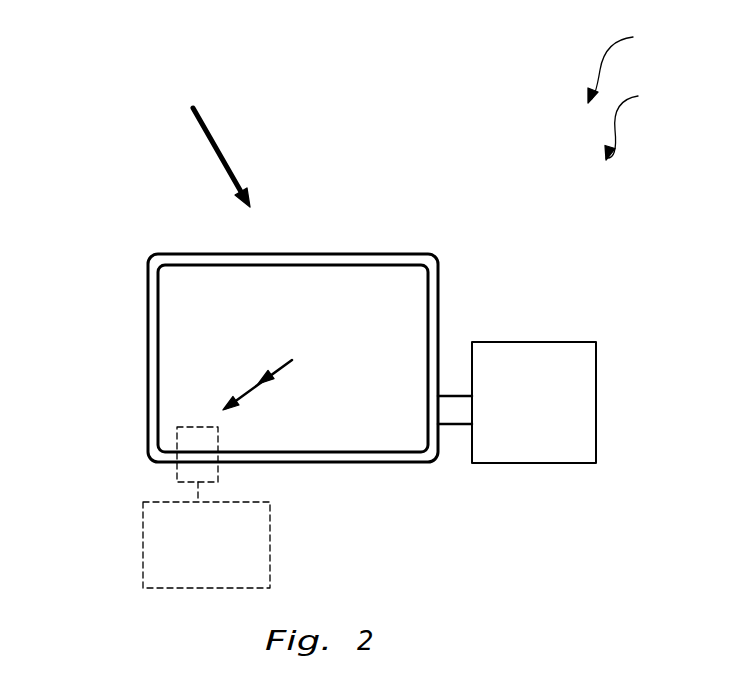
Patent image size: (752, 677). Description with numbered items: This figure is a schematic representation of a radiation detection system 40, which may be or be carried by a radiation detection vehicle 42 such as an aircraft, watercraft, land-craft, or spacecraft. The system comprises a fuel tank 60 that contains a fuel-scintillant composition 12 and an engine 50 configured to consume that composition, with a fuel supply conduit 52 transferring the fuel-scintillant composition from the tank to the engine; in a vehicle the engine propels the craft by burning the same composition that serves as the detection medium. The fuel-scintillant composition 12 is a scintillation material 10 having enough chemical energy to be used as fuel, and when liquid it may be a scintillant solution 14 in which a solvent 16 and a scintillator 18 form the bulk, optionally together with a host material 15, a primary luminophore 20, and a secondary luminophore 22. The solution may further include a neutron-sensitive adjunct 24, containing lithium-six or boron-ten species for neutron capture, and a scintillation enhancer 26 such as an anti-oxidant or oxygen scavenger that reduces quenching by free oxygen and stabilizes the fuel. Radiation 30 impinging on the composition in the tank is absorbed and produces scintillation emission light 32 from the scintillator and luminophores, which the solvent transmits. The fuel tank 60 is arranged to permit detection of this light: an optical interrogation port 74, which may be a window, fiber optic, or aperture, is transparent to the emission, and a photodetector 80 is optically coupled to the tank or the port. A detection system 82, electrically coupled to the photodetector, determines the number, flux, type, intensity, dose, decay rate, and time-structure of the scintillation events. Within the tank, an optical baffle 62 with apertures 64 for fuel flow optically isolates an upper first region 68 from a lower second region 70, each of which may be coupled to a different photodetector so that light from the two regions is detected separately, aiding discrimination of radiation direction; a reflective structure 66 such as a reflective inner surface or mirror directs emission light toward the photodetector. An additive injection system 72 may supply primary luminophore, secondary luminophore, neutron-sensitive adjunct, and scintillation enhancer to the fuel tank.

The scintillation material 10 is at (258, 278).
The fuel-scintillant composition 12 is at (275, 278).
The scintillant solution 14 is at (298, 277).
The host material 15 is at (367, 275).
The solvent 16 is at (320, 277).
The scintillator 18 is at (343, 276).
The primary luminophore 20 is at (417, 297).
The secondary luminophore 22 is at (390, 277).
The neutron-sensitive adjunct 24 is at (417, 278).
The scintillation enhancer 26 is at (416, 282).
The radiation 30 is at (211, 118).
The scintillation emission light 32 is at (282, 370).
The radiation detection system 40 is at (623, 62).
The radiation detection vehicle 42 is at (634, 121).
The engine 50 is at (543, 342).
The fuel supply conduit 52 is at (456, 426).
The fuel tank 60 is at (148, 270).
The optical baffle 62 is at (172, 298).
The aperture 64 is at (170, 320).
The reflective structure 66 is at (170, 344).
The first region 68 is at (170, 367).
The second region 70 is at (170, 393).
The additive injection system 72 is at (170, 412).
The optical interrogation port 74 is at (218, 447).
The photodetector 80 is at (178, 470).
The detection system 82 is at (143, 555).